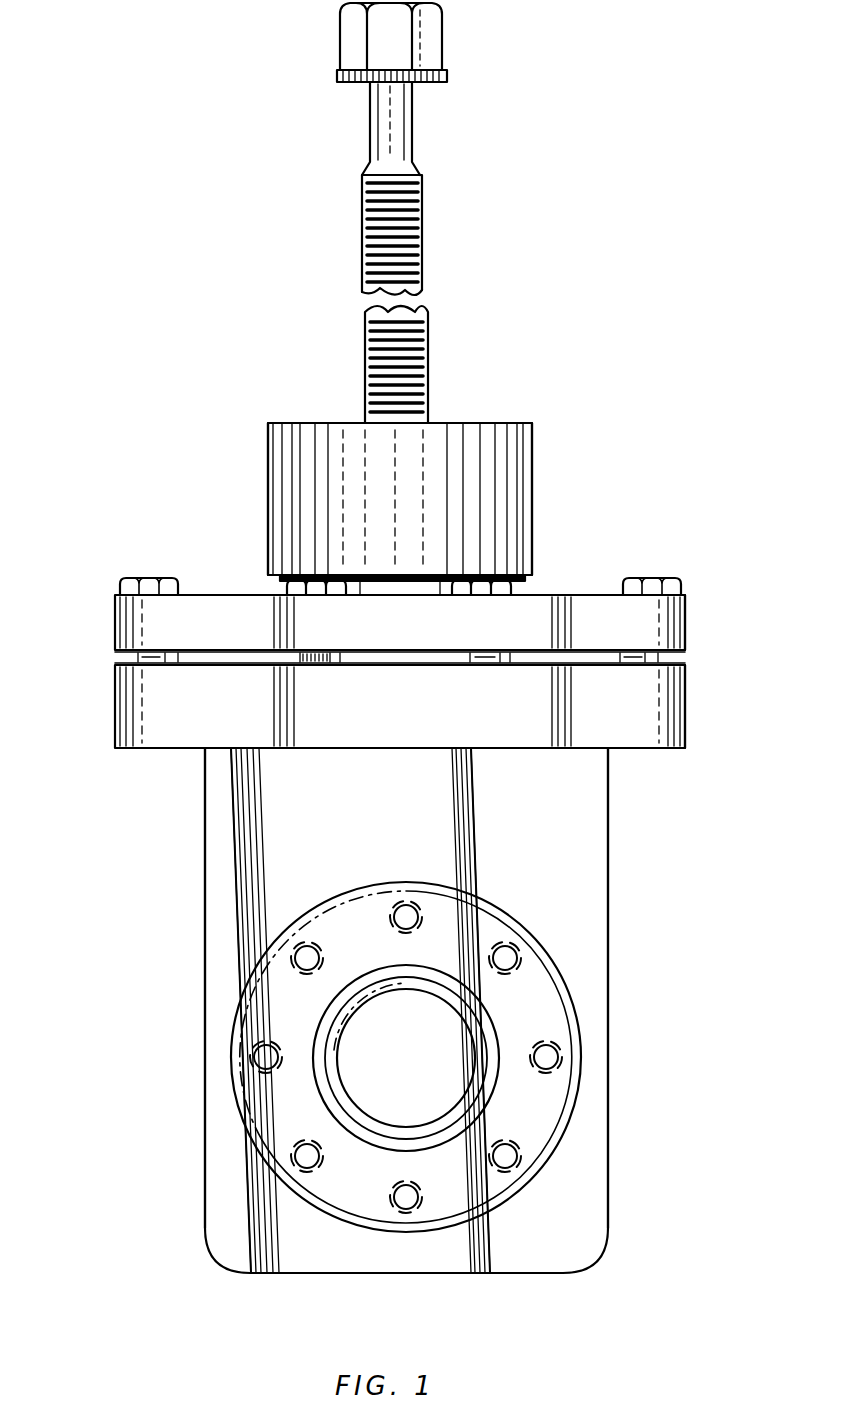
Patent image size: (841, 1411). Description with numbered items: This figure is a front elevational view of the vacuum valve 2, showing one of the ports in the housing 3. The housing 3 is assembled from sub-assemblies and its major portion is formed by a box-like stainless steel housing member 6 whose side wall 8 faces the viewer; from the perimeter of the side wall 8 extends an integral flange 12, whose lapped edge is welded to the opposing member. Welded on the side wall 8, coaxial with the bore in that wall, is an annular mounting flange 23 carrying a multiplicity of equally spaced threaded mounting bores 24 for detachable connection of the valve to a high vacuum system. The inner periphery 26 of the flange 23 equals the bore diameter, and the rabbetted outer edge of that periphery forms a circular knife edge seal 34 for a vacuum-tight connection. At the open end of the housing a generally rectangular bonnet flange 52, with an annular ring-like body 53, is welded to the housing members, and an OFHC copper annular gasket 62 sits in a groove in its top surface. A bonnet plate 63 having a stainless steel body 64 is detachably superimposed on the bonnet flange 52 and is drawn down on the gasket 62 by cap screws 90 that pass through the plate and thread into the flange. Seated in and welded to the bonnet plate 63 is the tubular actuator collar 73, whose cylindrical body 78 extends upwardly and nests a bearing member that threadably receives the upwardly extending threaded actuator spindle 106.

The threaded actuator spindle 106 is at (418, 268).
The cylindrical body of the actuator collar 78 is at (524, 456).
The vacuum valve 2 is at (578, 471).
The actuator collar 73 is at (265, 492).
The cap screws 90 is at (150, 578).
The bonnet plate 63 is at (106, 625).
The body of the bonnet plate 64 is at (688, 622).
The annular gasket 62 is at (217, 660).
The bonnet flange 52 is at (106, 710).
The annular ring-like body 53 is at (688, 718).
The housing member 6 is at (566, 835).
The side wall 8 is at (322, 818).
The housing 3 is at (614, 912).
The integral flange 12 is at (204, 908).
The annular mounting flange 23 is at (548, 1020).
The threaded mounting bores 24 is at (556, 1063).
The knife edge seal 34 is at (346, 1100).
The inner periphery of the flange 26 is at (430, 1015).